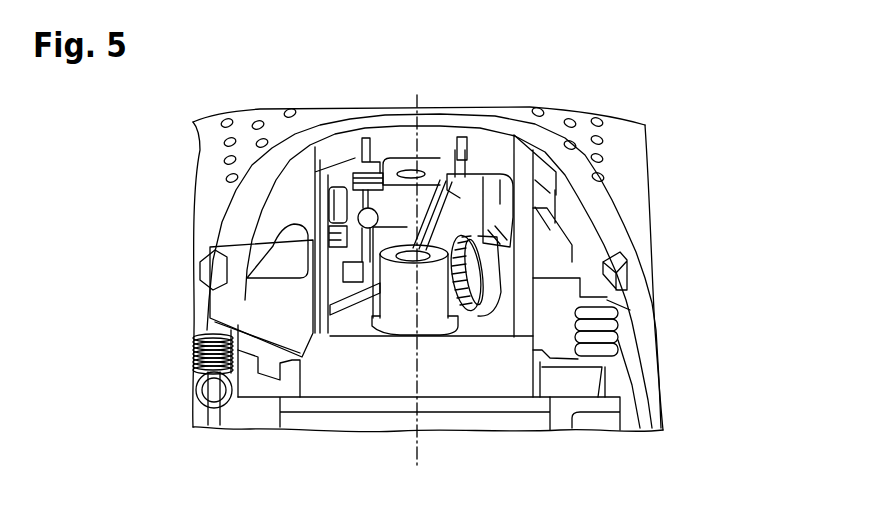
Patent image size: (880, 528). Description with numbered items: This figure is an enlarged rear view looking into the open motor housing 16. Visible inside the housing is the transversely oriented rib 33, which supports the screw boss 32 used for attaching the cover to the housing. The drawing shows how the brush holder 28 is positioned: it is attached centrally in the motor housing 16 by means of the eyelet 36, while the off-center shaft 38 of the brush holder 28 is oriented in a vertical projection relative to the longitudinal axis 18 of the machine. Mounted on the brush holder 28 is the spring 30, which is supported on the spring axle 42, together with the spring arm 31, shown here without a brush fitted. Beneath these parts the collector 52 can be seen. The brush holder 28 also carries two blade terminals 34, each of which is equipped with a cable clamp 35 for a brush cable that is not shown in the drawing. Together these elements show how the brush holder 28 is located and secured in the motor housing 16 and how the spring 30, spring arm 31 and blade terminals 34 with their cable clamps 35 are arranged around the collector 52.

The motor housing 16 is at (620, 190).
The longitudinal axis 18 is at (417, 445).
The brush holder 28 is at (508, 181).
The spring 30 is at (485, 296).
The spring arm 31 is at (478, 175).
The screw boss 32 is at (400, 302).
The rib 33 is at (362, 325).
The blade terminal 34 is at (362, 205).
The cable clamp 35 is at (330, 195).
The eyelet 36 is at (407, 168).
The off-center shaft 38 is at (458, 165).
The spring axle 42 is at (447, 307).
The collector 52 is at (345, 290).